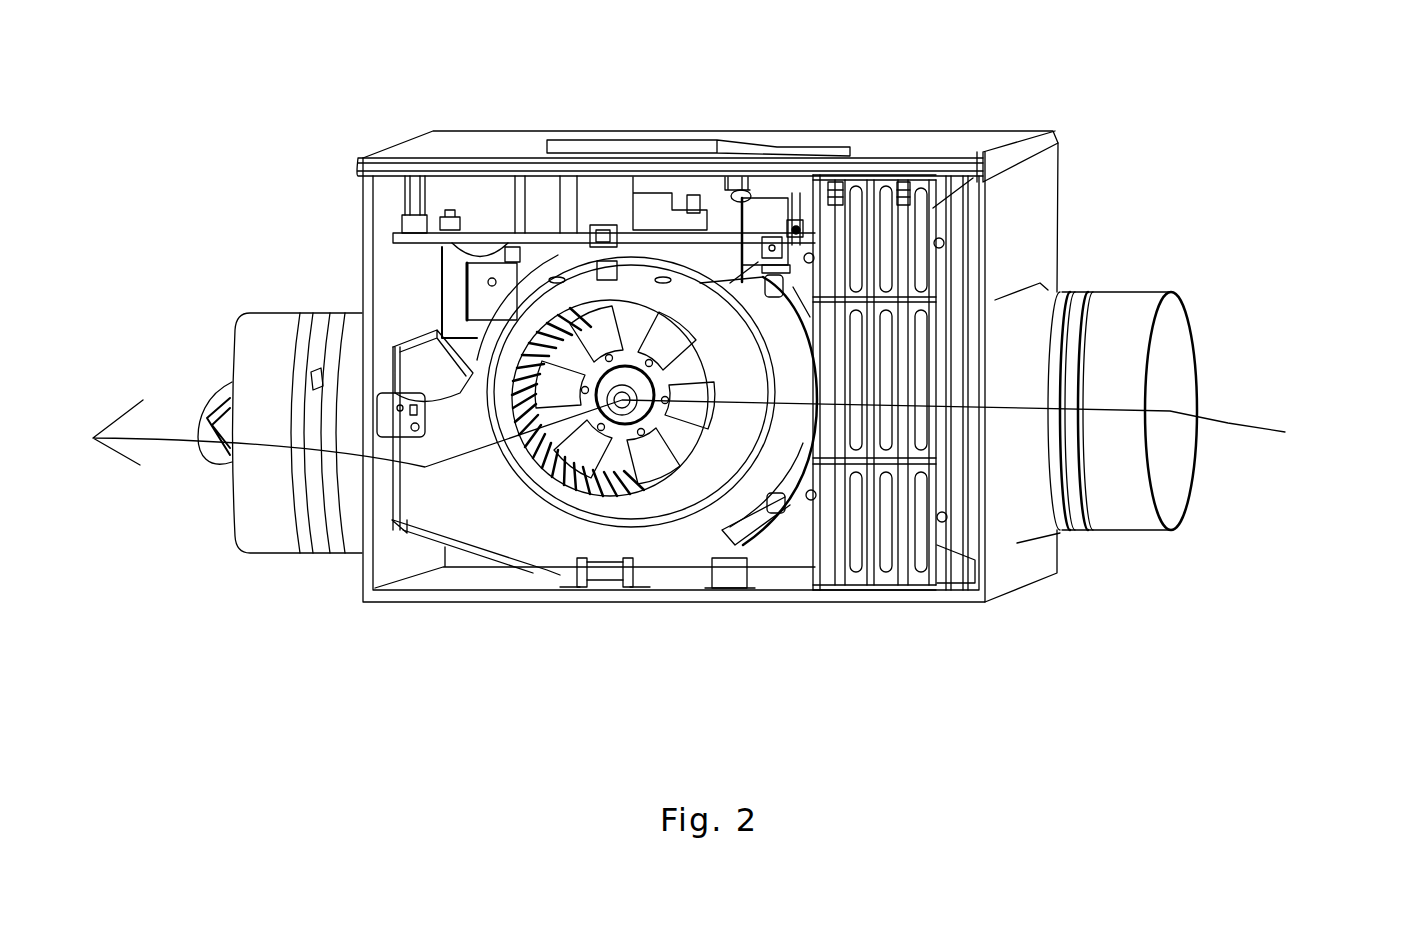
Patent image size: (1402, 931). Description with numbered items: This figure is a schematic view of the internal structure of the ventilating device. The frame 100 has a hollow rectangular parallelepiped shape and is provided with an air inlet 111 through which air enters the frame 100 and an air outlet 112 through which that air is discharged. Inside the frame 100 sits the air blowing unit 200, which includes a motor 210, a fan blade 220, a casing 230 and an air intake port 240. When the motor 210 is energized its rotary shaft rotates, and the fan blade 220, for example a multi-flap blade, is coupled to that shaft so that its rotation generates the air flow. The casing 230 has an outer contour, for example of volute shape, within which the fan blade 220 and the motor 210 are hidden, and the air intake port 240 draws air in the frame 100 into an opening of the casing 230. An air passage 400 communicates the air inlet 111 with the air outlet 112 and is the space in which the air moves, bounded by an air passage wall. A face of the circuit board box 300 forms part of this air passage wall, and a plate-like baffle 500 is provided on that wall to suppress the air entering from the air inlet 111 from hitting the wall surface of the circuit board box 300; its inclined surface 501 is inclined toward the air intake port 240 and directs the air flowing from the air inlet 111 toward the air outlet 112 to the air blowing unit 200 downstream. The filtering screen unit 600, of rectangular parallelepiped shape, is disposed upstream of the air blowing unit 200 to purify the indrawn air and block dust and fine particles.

The frame 100 is at (538, 156).
The air inlet 111 is at (1172, 363).
The air outlet 112 is at (235, 342).
The air blowing unit 200 is at (645, 510).
The motor 210 is at (622, 407).
The fan blade 220 is at (598, 497).
The casing 230 is at (515, 520).
The air intake port 240 is at (647, 447).
The circuit board box 300 is at (538, 197).
The air passage 400 is at (1228, 423).
The baffle 500 is at (824, 163).
The inclined surface 501 is at (787, 222).
The filtering screen unit 600 is at (870, 283).